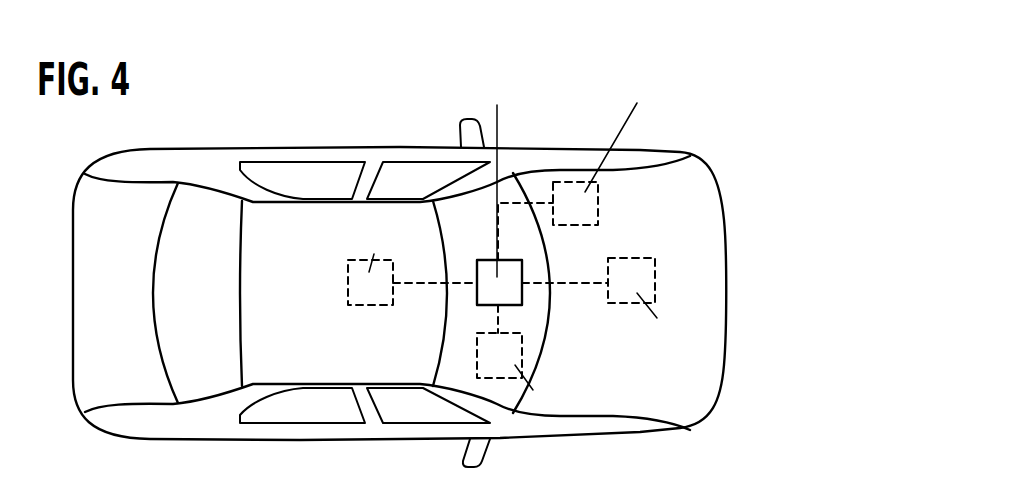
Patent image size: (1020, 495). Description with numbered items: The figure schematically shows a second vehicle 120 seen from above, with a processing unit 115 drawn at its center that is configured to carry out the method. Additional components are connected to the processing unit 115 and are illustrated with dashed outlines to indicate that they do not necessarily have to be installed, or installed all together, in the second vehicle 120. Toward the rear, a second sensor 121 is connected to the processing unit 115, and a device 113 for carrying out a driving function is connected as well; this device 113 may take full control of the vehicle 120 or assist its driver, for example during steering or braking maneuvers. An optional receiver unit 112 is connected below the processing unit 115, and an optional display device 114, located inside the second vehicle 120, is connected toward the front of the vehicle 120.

The second vehicle 120 is at (363, 125).
The processing unit 115 is at (477, 293).
The display device 114 is at (348, 283).
The device for carrying out a driving function 113 is at (598, 203).
The second sensor 121 is at (655, 280).
The optical receiver unit 112 is at (522, 355).